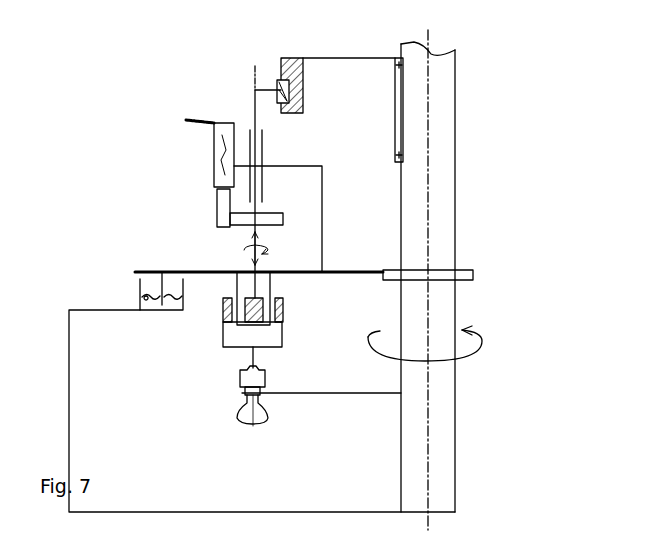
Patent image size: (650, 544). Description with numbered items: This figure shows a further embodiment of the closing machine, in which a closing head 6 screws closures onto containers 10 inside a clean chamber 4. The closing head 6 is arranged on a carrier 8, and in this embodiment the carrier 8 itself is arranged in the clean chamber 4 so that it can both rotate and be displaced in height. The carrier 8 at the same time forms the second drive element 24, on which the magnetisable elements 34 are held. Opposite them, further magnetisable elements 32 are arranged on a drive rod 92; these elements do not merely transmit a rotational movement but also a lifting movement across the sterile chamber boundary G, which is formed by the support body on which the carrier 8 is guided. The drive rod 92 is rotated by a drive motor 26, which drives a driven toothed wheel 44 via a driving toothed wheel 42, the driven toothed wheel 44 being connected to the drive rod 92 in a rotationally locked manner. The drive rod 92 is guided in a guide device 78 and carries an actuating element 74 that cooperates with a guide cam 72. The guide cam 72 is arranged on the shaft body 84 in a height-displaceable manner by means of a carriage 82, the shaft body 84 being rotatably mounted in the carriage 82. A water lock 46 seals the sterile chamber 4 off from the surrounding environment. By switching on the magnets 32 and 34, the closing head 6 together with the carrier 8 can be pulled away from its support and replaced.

The clean chamber 4 is at (309, 450).
The closing head 6 is at (263, 376).
The carrier 8 is at (223, 335).
The container 10 is at (238, 419).
The second drive element 24 is at (282, 345).
The drive motor 26 is at (214, 178).
The magnetisable elements 32 is at (282, 326).
The magnetisable elements 34 is at (284, 300).
The driving toothed wheel 42 is at (217, 212).
The driven toothed wheel 44 is at (283, 222).
The water lock 46 is at (140, 298).
The guide cam 72 is at (281, 68).
The actuating element 74 is at (300, 113).
The guide device 78 is at (263, 148).
The carriage 82 is at (397, 103).
The shaft body 84 is at (430, 188).
The drive rod 92 is at (254, 118).
The sterile chamber boundary G is at (231, 283).